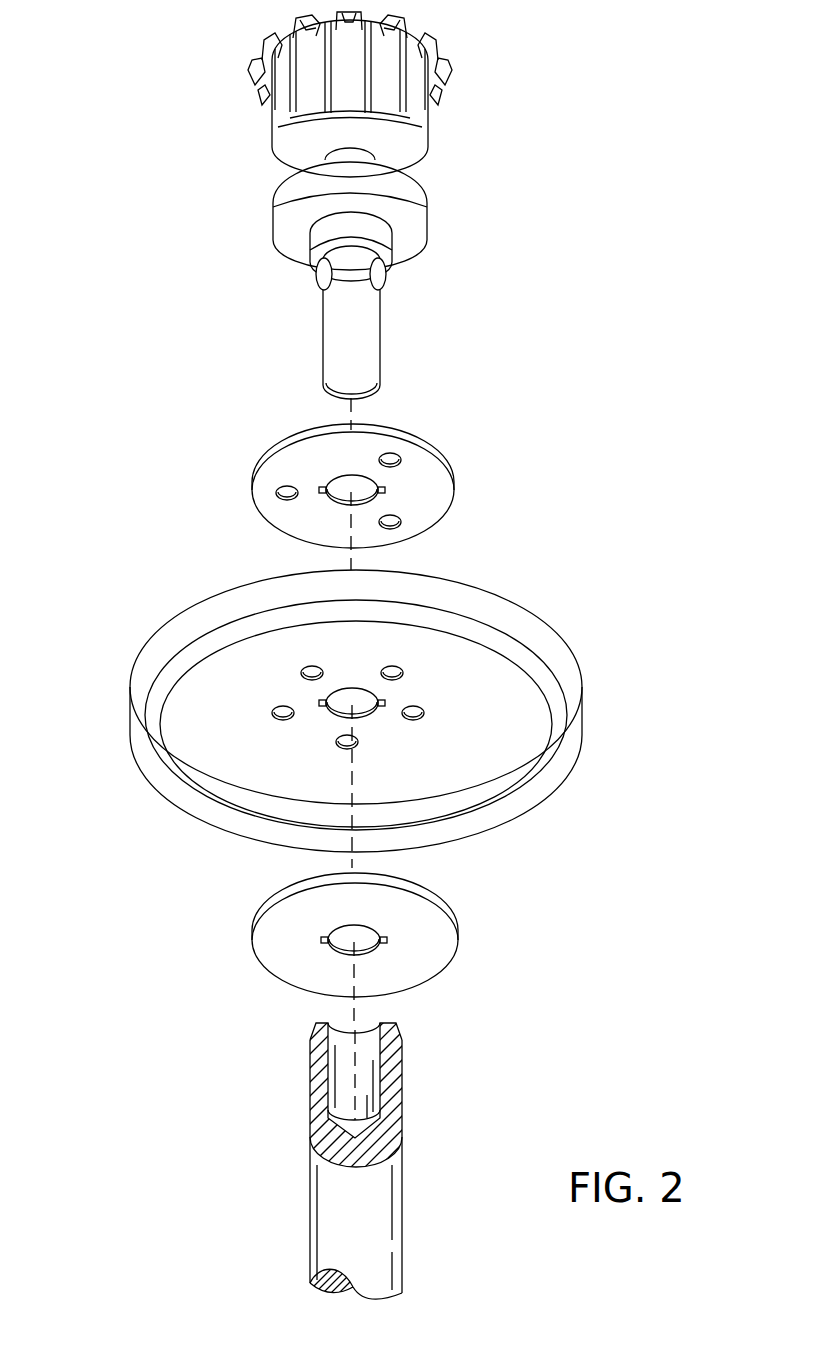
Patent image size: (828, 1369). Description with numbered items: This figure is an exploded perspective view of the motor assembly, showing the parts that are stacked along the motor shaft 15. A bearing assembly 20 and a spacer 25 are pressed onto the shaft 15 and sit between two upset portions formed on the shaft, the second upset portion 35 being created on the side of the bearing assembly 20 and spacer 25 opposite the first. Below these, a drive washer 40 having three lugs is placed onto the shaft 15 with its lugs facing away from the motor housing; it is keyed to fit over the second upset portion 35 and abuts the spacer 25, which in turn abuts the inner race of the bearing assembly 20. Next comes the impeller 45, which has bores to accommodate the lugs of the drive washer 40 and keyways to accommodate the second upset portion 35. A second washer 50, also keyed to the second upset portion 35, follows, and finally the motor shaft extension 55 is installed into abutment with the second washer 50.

The motor shaft 15 is at (323, 357).
The bearing assembly 20 is at (275, 208).
The spacer 25 is at (310, 245).
The second upset portion 35 is at (318, 283).
The drive washer 40 is at (252, 487).
The impeller 45 is at (130, 735).
The second washer 50 is at (252, 950).
The motor shaft extension 55 is at (310, 1203).